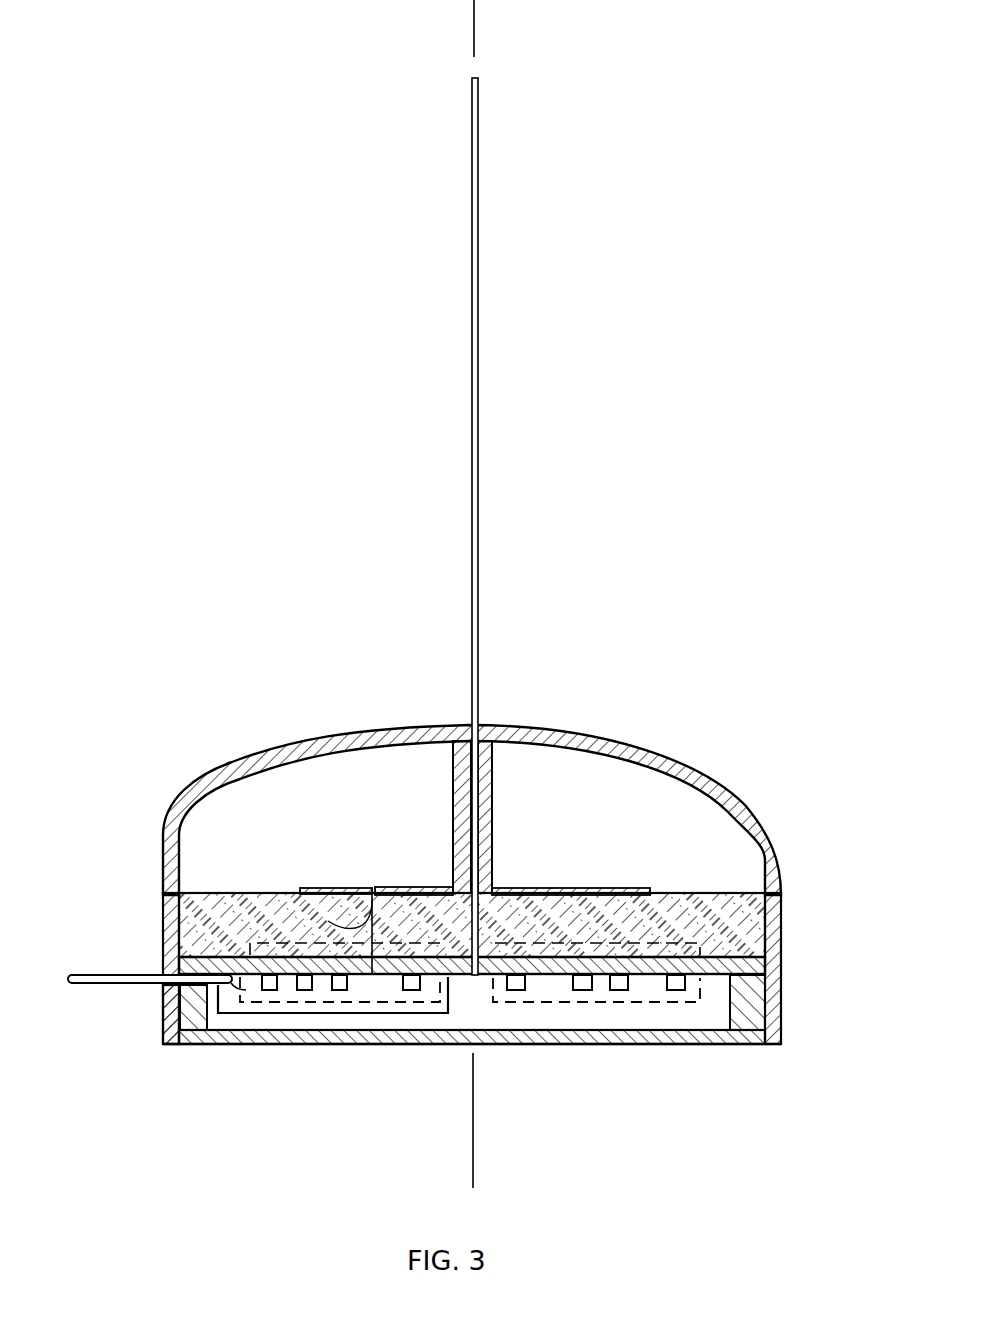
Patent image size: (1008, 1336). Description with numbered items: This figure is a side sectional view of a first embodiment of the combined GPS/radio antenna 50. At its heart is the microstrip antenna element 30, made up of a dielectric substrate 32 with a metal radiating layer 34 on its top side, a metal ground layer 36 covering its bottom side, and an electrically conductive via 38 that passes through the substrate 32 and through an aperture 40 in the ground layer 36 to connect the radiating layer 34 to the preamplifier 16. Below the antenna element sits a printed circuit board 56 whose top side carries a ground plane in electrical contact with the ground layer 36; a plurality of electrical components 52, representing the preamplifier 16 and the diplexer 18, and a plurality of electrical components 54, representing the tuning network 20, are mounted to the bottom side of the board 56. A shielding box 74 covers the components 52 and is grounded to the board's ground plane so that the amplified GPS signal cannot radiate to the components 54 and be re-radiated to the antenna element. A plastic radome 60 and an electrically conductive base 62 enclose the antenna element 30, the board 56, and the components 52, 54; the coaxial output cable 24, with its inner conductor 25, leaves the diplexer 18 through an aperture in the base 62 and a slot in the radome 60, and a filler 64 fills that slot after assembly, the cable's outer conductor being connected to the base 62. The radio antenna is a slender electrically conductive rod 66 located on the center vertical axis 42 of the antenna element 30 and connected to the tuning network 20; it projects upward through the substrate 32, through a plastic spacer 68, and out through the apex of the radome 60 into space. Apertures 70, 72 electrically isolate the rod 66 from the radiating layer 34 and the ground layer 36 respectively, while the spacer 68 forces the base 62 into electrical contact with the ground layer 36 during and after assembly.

The preamplifier 16 is at (340, 1046).
The diplexer 18 is at (408, 1003).
The tuning network 20 is at (681, 1003).
The coaxial output cable 24 is at (125, 984).
The inner conductor 25 is at (235, 990).
The microstrip antenna element 30 is at (783, 892).
The dielectric substrate 32 is at (634, 934).
The metal radiating layer 34 is at (328, 888).
The metal ground layer 36 is at (781, 927).
The electrically conductive via 38 is at (349, 888).
The aperture 40 is at (330, 920).
The center vertical axis 42 is at (472, 25).
The GPS/radio antenna 50 is at (774, 656).
The electrical components 52 is at (406, 990).
The electrical components 54 is at (517, 991).
The printed circuit board 56 is at (781, 977).
The plastic radome 60 is at (183, 807).
The electrically conductive base 62 is at (190, 1040).
The filler 64 is at (166, 1022).
The electrically conductive rod 66 is at (470, 527).
The plastic spacer 68 is at (450, 750).
The aperture 70 is at (453, 872).
The aperture 72 is at (465, 948).
The shielding box 74 is at (430, 1013).